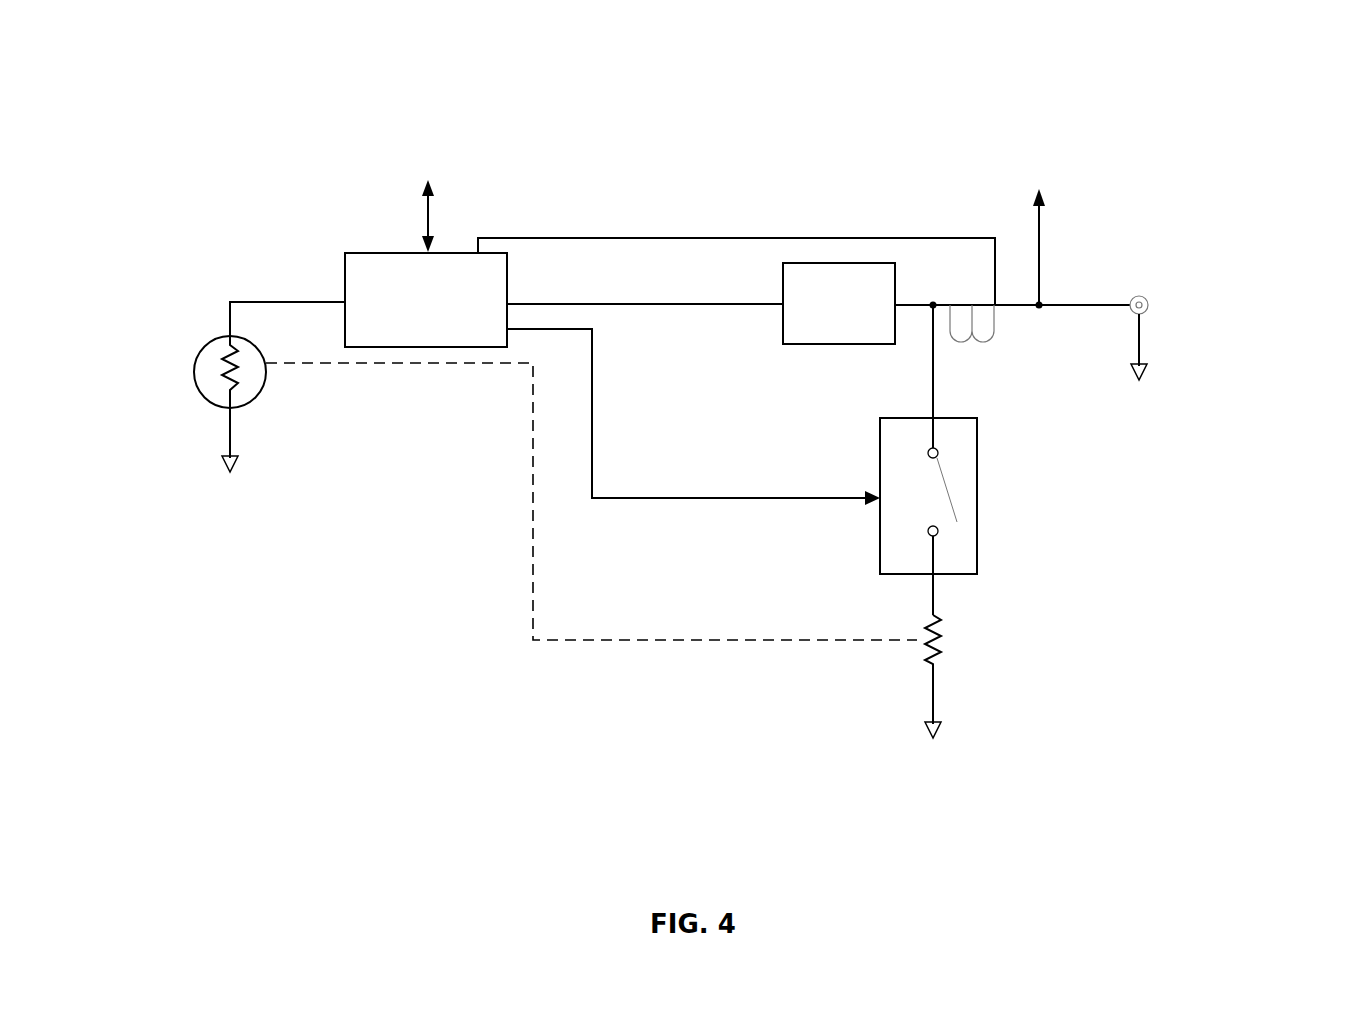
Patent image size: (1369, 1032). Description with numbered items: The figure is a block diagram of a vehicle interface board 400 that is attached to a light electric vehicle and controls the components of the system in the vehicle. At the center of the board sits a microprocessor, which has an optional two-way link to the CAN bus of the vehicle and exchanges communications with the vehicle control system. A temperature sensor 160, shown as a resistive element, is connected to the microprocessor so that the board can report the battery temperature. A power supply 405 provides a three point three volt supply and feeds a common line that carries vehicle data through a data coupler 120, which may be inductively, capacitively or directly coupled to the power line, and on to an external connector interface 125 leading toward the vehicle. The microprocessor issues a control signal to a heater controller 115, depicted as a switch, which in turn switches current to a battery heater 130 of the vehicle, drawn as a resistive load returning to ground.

The vehicle interface board 400 is at (1318, 84).
The temperature sensor 160 is at (225, 355).
The power supply 405 is at (795, 345).
The data coupler 120 is at (980, 342).
The external connector interface 125 is at (1148, 303).
The heater controller 115 is at (977, 558).
The battery heater 130 is at (945, 648).